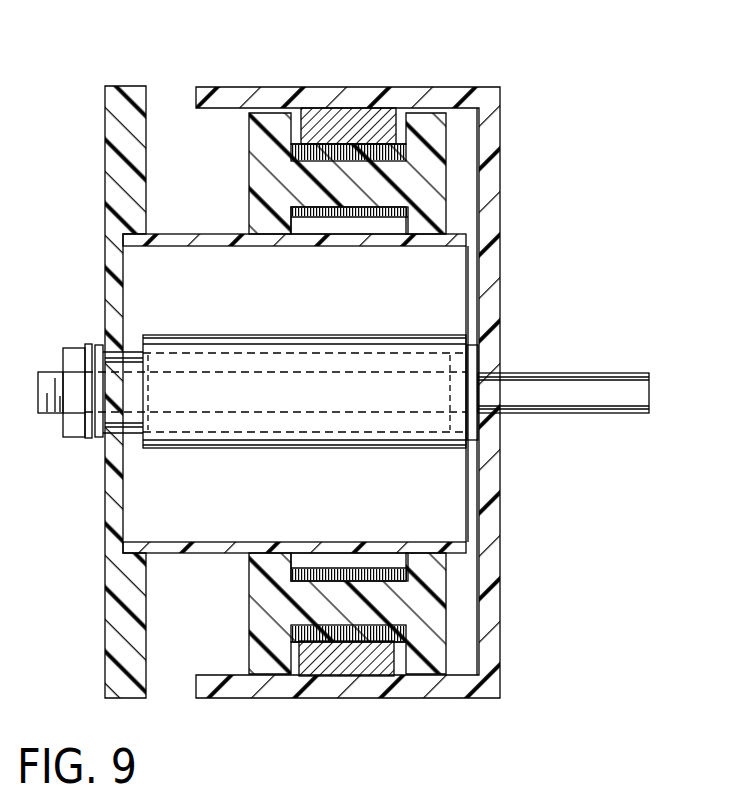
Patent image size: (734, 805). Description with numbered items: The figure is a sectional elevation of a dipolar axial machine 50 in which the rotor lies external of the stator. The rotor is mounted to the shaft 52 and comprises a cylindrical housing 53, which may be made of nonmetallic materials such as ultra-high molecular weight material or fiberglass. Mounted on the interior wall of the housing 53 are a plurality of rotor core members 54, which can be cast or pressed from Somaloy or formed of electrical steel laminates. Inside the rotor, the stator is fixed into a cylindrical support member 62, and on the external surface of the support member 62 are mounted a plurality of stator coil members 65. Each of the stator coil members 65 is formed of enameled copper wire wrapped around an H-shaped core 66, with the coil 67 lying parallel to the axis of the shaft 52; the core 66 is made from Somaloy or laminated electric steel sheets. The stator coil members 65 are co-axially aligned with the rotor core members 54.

The dipolar axial machine 50 is at (524, 153).
The shaft 52 is at (553, 382).
The cylindrical housing 53 is at (500, 572).
The rotor core members 54 is at (352, 115).
The cylindrical support member 62 is at (178, 542).
The stator coil members 65 is at (246, 137).
The H shaped core 66 is at (413, 618).
The coil 67 is at (297, 632).